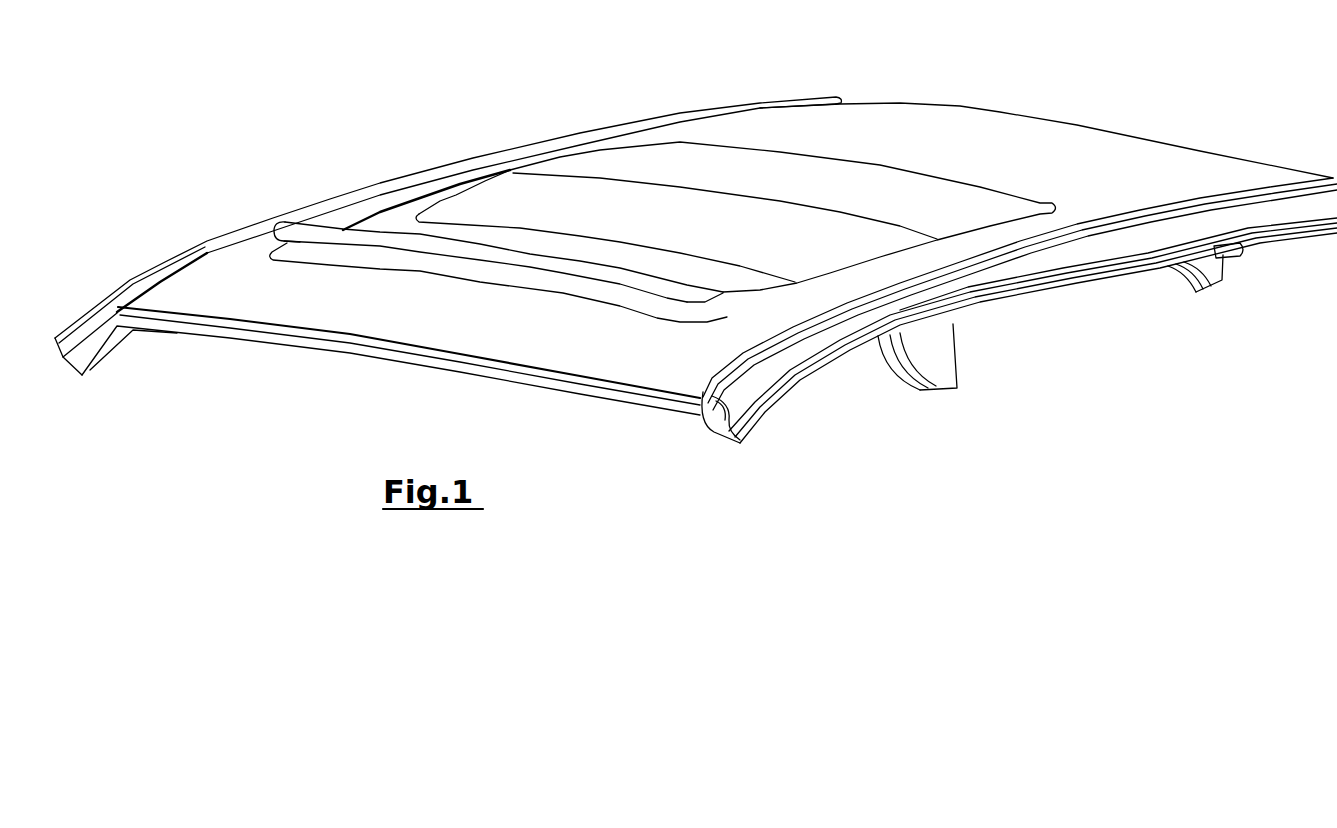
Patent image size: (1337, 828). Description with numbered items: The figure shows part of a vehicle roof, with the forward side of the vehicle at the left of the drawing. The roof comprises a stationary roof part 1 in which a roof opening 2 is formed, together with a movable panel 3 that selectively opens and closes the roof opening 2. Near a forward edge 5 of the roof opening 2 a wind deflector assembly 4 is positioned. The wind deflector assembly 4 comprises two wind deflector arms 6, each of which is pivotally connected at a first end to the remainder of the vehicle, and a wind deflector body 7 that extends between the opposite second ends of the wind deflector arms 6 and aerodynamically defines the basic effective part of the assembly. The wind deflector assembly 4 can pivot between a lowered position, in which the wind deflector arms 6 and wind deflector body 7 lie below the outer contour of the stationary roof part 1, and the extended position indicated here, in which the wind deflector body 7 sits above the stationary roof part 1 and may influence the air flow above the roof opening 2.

The stationary roof part 1 is at (963, 145).
The roof opening 2 is at (399, 215).
The movable panel 3 is at (487, 206).
The wind deflector assembly 4 is at (345, 222).
The forward edge 5 is at (563, 291).
The wind deflector arms 6 is at (302, 226).
The wind deflector body 7 is at (511, 255).